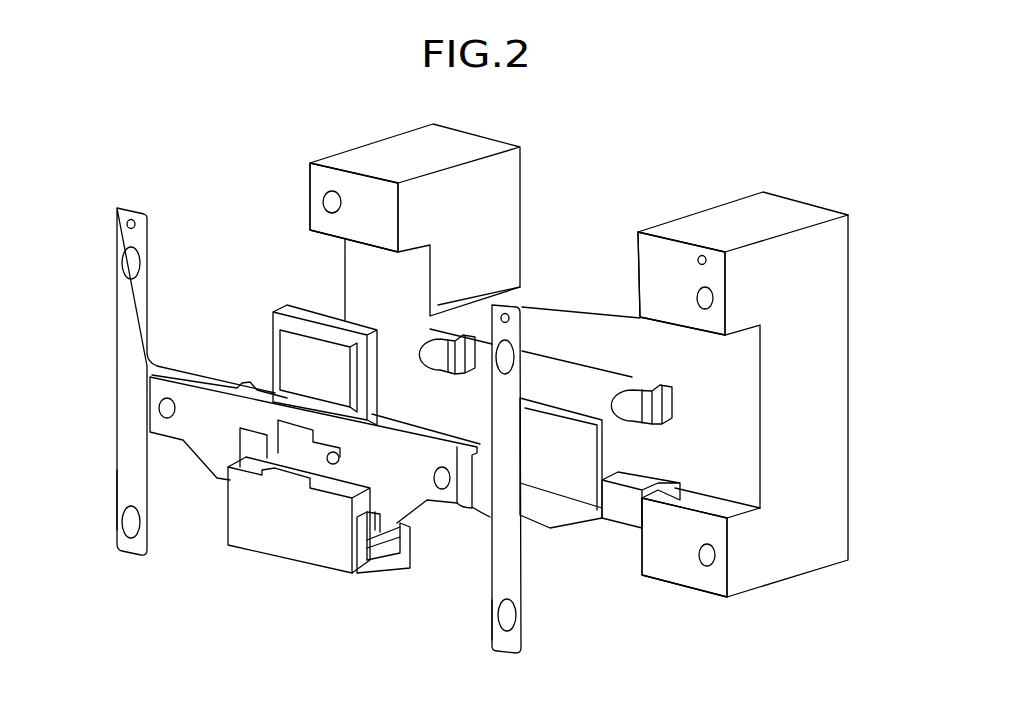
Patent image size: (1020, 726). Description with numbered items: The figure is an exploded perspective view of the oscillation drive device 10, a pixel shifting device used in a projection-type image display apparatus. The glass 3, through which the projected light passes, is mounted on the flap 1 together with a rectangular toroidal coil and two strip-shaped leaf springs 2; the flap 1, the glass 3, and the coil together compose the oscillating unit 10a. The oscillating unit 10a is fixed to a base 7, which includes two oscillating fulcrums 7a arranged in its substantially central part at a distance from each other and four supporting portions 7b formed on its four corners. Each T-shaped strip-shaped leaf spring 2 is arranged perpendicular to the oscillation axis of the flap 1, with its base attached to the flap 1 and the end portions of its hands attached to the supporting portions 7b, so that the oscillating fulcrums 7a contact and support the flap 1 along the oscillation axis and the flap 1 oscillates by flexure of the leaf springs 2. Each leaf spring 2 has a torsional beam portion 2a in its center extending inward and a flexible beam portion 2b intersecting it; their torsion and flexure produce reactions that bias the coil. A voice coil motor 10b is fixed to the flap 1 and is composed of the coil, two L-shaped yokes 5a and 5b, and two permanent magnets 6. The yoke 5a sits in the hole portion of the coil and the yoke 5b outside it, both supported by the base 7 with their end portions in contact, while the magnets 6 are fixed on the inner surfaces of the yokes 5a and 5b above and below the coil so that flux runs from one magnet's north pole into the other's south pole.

The flap 1 is at (210, 433).
The strip-shaped leaf spring 2 is at (130, 326).
The torsional beam portion 2a is at (130, 405).
The flexible beam portion 2b is at (130, 470).
The glass 3 is at (283, 355).
The L-shaped yoke 5a is at (266, 476).
The L-shaped yoke 5b is at (289, 535).
The permanent magnet 6 is at (374, 522).
The base 7 is at (832, 517).
The oscillating fulcrum 7a is at (612, 390).
The supporting portion 7b is at (370, 212).
The oscillation drive device 10 is at (212, 192).
The oscillating unit 10a is at (238, 298).
The voice coil motor 10b is at (292, 630).